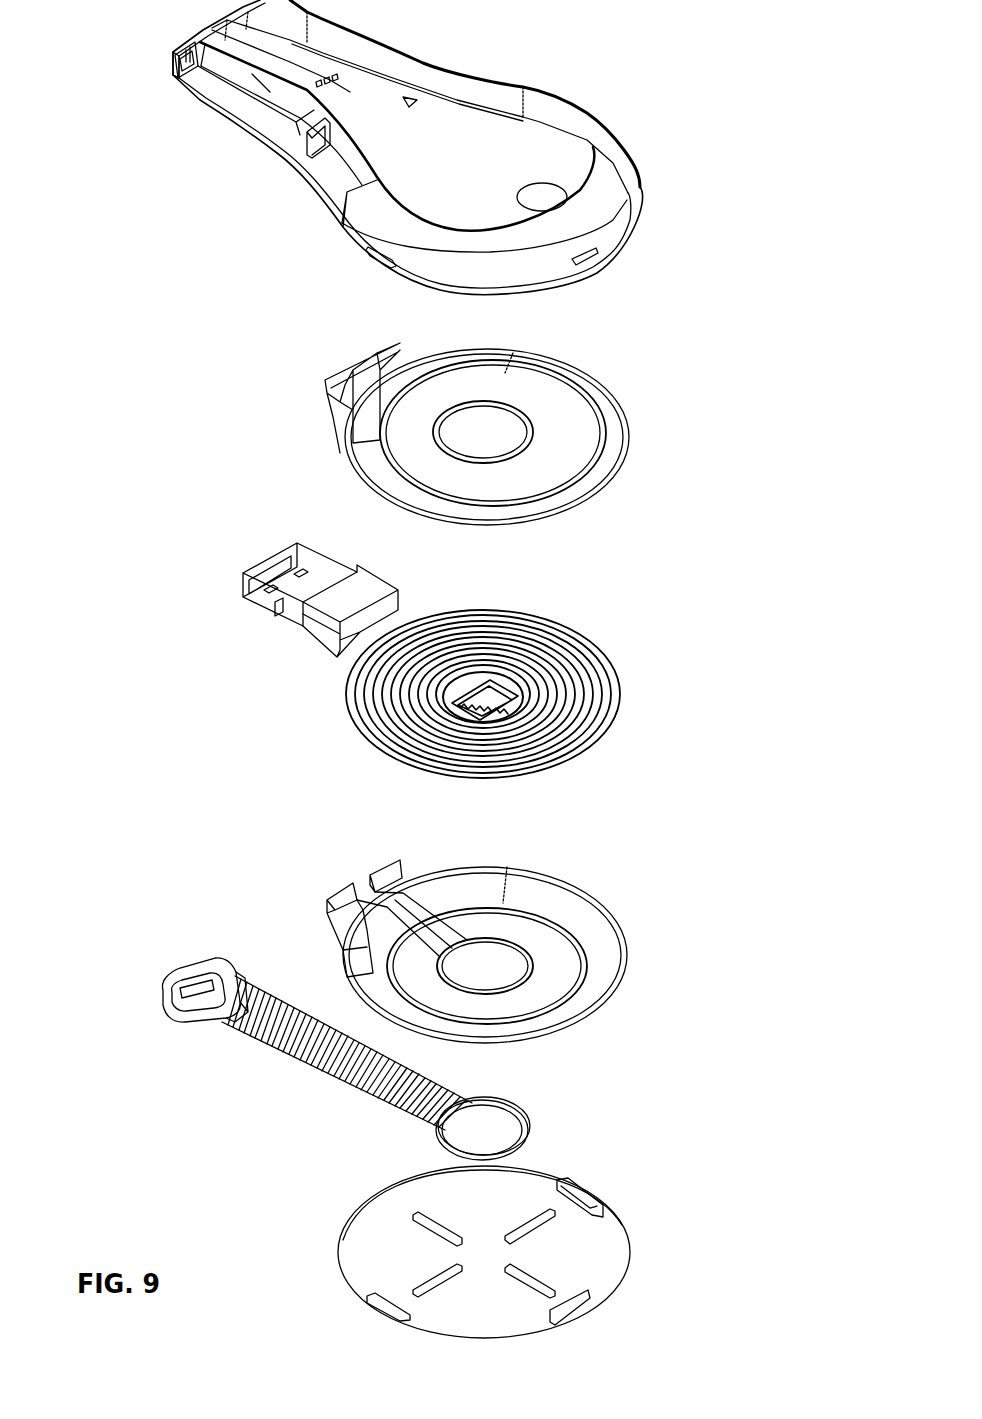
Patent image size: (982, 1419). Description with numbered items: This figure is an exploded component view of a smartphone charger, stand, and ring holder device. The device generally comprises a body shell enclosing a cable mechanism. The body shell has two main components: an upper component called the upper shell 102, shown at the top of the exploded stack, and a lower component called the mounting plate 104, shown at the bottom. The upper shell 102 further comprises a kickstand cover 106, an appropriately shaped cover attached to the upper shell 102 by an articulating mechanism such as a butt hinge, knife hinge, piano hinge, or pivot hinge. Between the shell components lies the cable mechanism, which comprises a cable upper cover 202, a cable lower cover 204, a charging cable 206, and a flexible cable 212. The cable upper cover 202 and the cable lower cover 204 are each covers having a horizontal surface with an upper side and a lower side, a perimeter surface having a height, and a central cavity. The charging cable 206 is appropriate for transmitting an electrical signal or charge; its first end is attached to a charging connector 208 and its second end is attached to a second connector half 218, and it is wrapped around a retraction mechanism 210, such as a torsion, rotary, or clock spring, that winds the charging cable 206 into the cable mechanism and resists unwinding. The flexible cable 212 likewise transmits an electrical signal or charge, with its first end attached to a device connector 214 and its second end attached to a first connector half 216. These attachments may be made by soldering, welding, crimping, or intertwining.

The upper shell 102 is at (430, 75).
The mounting plate 104 is at (604, 1262).
The kickstand cover 106 is at (183, 60).
The cable upper cover 202 is at (606, 395).
The cable lower cover 204 is at (600, 930).
The charging cable 206 is at (560, 630).
The charging connector 208 is at (263, 595).
The retraction mechanism 210 is at (577, 713).
The flexible cable 212 is at (335, 1065).
The device connector 214 is at (168, 1018).
The first connector half 216 is at (500, 1133).
The second connector half 218 is at (433, 717).